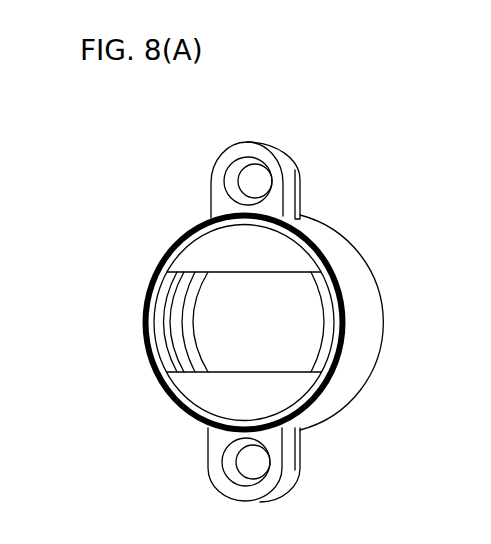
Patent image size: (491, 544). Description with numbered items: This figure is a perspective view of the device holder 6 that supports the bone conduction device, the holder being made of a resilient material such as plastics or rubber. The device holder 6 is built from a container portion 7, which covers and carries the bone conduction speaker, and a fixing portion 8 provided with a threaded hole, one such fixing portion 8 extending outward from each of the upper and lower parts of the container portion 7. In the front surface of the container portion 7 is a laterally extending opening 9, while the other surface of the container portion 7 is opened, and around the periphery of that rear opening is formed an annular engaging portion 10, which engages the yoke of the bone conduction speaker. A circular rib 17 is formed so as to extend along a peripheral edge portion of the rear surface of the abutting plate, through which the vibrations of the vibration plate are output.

The device holder 6 is at (328, 201).
The container portion 7 is at (352, 385).
The fixing portion 8 is at (279, 153).
The opening 9 is at (273, 272).
The annular engaging portion 10 is at (207, 355).
The circular rib 17 is at (193, 418).